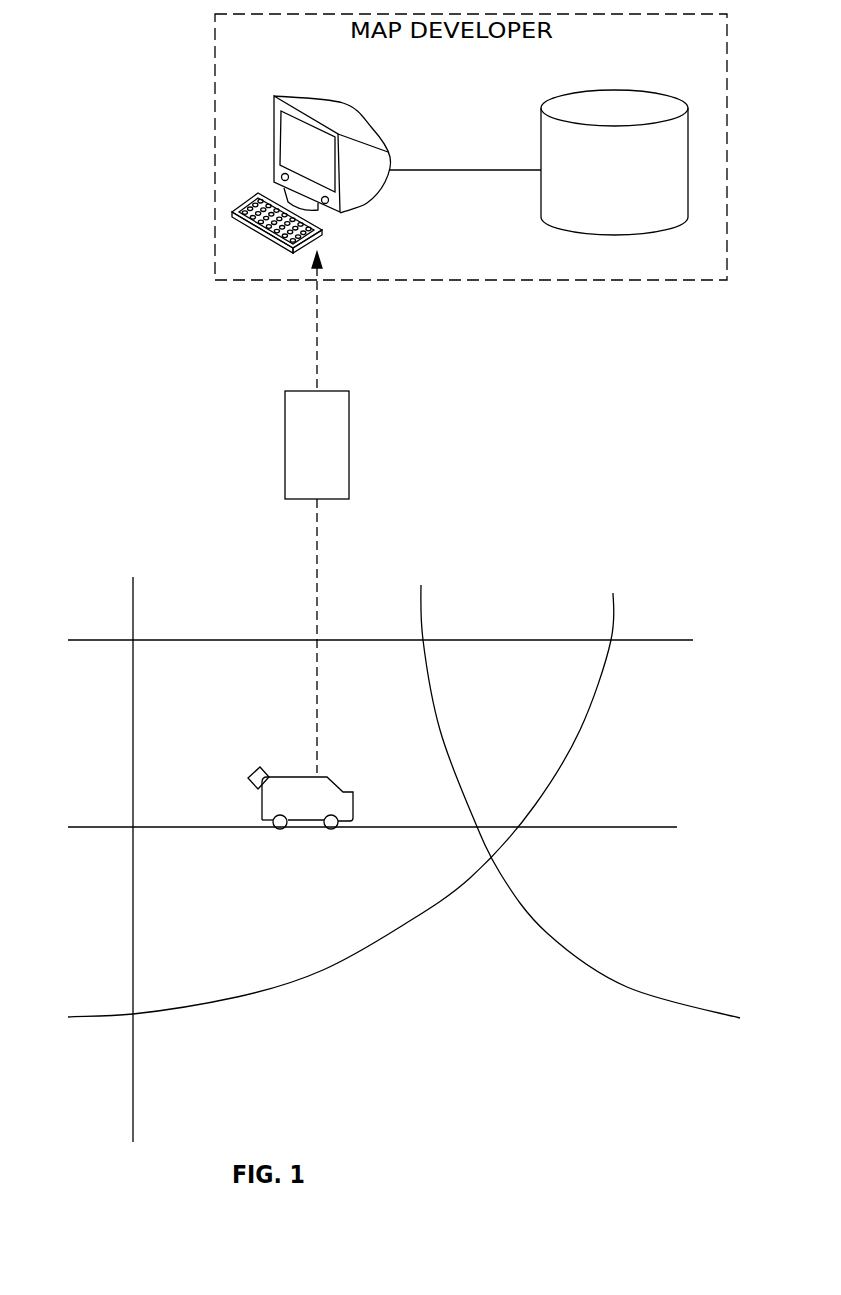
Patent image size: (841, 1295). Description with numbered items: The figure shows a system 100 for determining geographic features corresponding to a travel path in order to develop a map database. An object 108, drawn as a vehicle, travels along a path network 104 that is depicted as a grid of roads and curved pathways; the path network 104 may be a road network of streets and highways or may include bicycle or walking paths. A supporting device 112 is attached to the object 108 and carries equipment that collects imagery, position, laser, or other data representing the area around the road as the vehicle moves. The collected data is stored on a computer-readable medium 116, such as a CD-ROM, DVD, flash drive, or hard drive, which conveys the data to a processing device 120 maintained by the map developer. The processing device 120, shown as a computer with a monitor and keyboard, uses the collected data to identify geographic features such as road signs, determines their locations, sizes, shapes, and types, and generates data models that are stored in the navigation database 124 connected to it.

The system 100 is at (143, 408).
The path network 104 is at (647, 640).
The object 108 is at (328, 778).
The supporting device 112 is at (263, 773).
The computer-readable medium 116 is at (338, 457).
The processing device 120 is at (348, 102).
The navigation database 124 is at (636, 184).